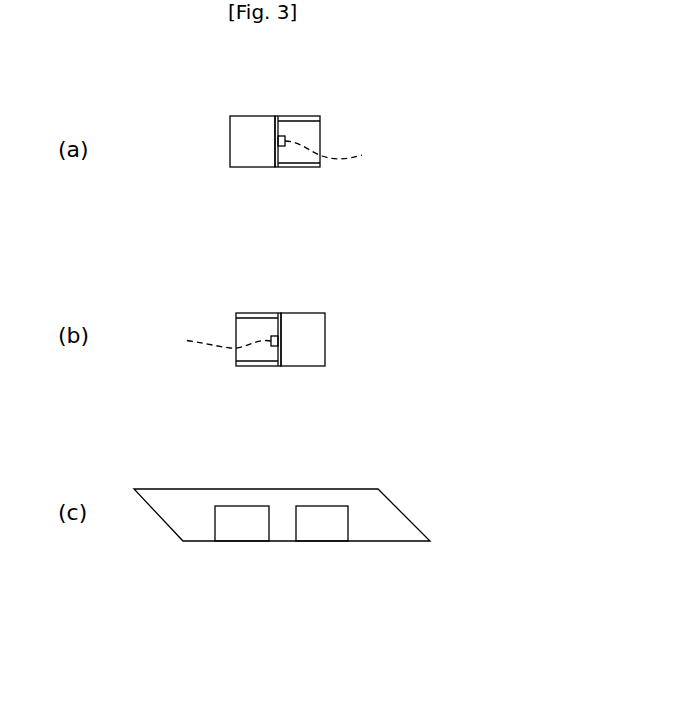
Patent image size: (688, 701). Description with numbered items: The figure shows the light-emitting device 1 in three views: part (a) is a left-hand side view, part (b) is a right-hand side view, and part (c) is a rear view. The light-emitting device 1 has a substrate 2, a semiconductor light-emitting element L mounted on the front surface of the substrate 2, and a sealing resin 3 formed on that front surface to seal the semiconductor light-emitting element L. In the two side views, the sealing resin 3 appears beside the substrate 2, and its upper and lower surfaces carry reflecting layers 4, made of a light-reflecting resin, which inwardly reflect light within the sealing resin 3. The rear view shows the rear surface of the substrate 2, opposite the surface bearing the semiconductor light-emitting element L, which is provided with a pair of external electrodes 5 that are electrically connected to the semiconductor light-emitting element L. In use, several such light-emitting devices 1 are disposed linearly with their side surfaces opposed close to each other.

The light-emitting device 1 is at (335, 112).
The substrate 2 is at (230, 140).
The sealing resin 3 is at (320, 155).
The reflecting layer 4 is at (295, 116).
The external electrode 5 is at (243, 528).
The semiconductor light-emitting element L is at (273, 247).